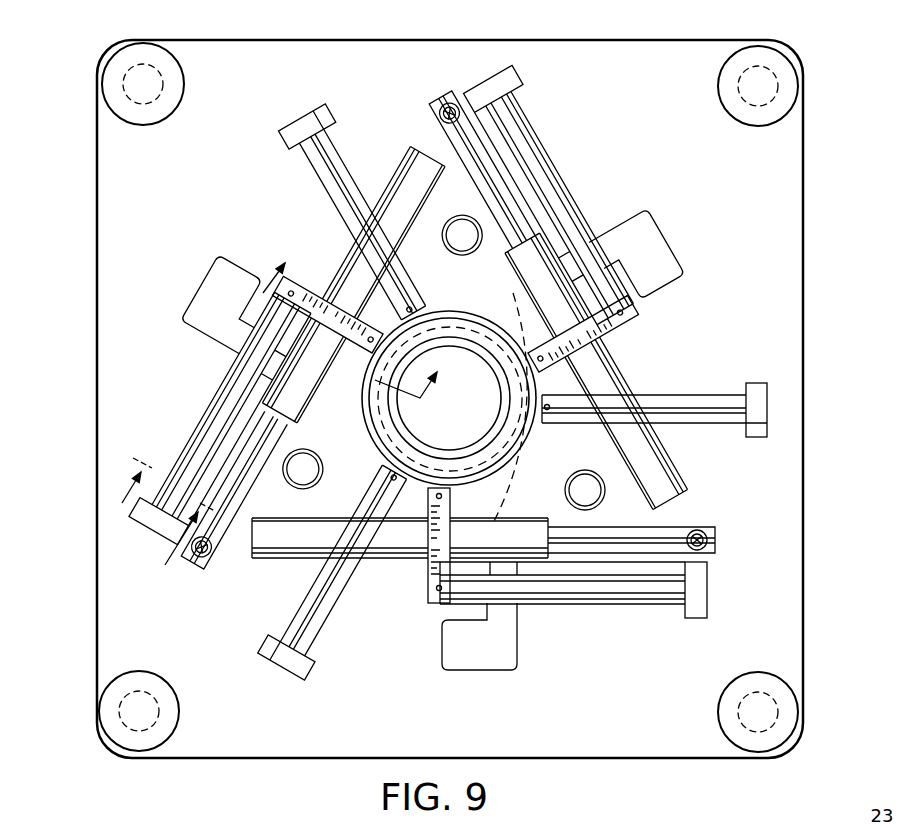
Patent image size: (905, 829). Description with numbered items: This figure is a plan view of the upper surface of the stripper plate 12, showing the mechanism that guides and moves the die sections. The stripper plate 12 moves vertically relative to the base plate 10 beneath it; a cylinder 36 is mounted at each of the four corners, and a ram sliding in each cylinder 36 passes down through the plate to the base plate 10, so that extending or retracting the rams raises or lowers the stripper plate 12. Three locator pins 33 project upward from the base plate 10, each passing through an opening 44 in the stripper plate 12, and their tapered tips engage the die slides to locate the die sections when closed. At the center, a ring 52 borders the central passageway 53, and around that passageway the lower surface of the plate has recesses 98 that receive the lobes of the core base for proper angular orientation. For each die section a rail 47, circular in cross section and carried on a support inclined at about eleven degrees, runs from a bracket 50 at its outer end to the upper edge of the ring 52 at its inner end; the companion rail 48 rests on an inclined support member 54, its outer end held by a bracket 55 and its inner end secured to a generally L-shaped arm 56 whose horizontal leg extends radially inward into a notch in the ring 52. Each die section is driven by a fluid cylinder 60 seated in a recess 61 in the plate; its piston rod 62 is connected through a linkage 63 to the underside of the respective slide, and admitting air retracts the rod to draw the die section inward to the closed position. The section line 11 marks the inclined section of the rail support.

The base plate 10 is at (361, 314).
The section line 11 is at (153, 525).
The stripper plate 12 is at (796, 610).
The locator pin 33 is at (462, 232).
The cylinder 36 is at (100, 90).
The opening 44 is at (463, 250).
The rail 47 is at (333, 177).
The rail 48 is at (532, 157).
The bracket 50 is at (318, 112).
The ring 52 is at (540, 448).
The central passageway 53 is at (392, 410).
The inclined support member 54 is at (520, 120).
The bracket 55 is at (500, 62).
The L-shaped arm 56 is at (312, 292).
The fluid cylinder 60 is at (416, 160).
The recess 61 is at (412, 252).
The piston rod 62 is at (505, 218).
The linkage 63 is at (445, 102).
The recess 98 is at (515, 300).